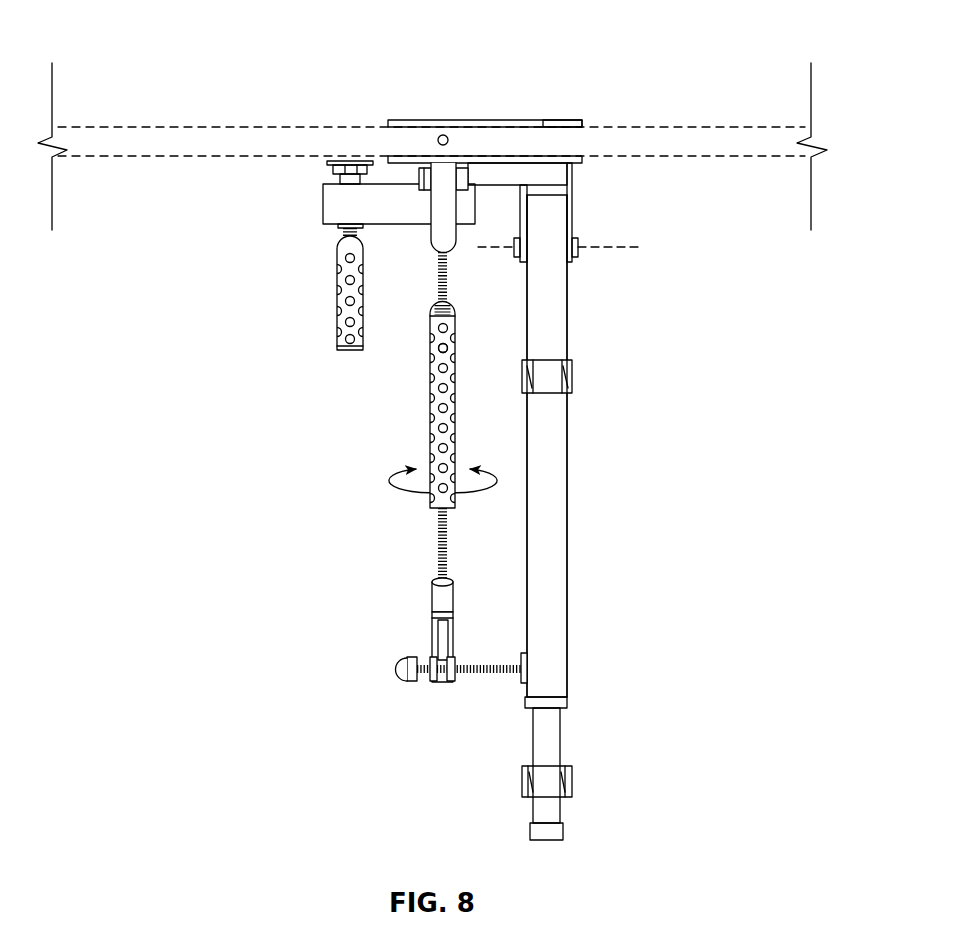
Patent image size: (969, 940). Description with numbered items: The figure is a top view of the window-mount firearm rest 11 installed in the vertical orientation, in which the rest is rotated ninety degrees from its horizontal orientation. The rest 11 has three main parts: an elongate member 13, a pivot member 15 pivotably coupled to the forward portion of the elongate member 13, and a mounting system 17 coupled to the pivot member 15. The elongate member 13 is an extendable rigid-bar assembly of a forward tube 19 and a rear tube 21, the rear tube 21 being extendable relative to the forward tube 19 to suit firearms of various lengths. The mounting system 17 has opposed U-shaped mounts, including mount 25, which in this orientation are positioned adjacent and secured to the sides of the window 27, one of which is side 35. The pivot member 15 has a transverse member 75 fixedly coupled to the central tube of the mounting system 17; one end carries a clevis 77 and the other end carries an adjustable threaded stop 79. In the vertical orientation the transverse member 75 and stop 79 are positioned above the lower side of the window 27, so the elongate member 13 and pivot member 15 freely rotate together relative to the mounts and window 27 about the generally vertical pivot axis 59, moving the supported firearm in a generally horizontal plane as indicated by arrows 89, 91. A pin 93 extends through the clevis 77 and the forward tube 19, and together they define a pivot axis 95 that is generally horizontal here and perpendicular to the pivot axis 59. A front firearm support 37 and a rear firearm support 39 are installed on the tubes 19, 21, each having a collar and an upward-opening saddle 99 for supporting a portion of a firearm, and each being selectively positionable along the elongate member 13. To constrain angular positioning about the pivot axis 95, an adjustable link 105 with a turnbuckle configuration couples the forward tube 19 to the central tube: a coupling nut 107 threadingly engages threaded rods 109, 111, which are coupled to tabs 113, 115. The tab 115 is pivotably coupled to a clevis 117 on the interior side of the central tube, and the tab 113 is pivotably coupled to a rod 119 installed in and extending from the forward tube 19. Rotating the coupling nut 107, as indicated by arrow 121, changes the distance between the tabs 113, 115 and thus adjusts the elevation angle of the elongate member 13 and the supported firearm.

The window-mount firearm rest 11 is at (682, 38).
The elongate member 13 is at (575, 641).
The pivot member 15 is at (577, 172).
The mounting system 17 is at (489, 117).
The forward tube 19 is at (558, 590).
The rear tube 21 is at (553, 733).
The mount 25 is at (543, 119).
The window 27 is at (181, 125).
The side 35 is at (130, 150).
The front firearm support 37 is at (580, 360).
The rear firearm support 39 is at (580, 768).
The pivot axis 59 is at (441, 134).
The transverse member 75 is at (325, 206).
The clevis 77 is at (572, 205).
The adjustable threaded stop 79 is at (334, 302).
The arrow 89 is at (474, 548).
The arrow 91 is at (616, 547).
The pin 93 is at (515, 248).
The pivot axis 95 is at (633, 248).
The saddle 99 is at (533, 382).
The adjustable link 105 is at (428, 358).
The coupling nut 107 is at (447, 338).
The threaded rod 109 is at (438, 540).
The threaded rod 111 is at (438, 272).
The tab 113 is at (430, 626).
The tab 115 is at (441, 240).
The clevis 117 is at (425, 190).
The rod 119 is at (485, 678).
The arrow 121 is at (405, 478).